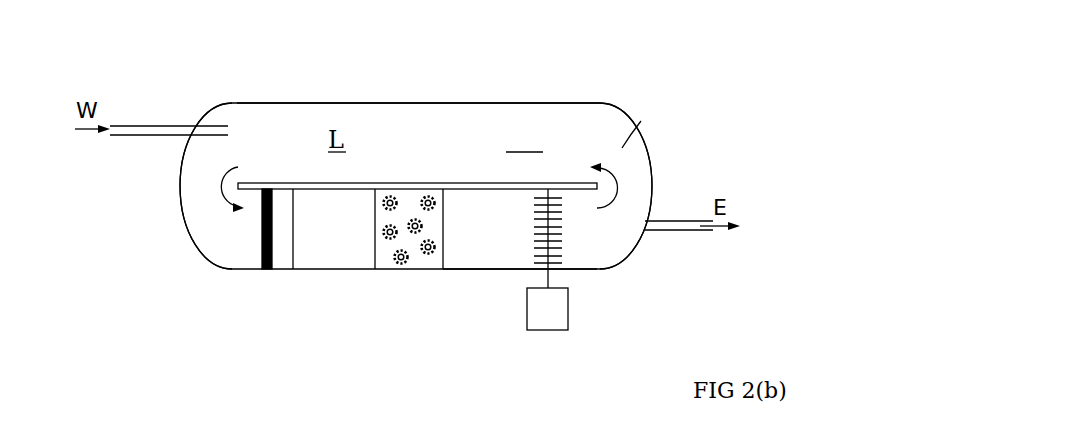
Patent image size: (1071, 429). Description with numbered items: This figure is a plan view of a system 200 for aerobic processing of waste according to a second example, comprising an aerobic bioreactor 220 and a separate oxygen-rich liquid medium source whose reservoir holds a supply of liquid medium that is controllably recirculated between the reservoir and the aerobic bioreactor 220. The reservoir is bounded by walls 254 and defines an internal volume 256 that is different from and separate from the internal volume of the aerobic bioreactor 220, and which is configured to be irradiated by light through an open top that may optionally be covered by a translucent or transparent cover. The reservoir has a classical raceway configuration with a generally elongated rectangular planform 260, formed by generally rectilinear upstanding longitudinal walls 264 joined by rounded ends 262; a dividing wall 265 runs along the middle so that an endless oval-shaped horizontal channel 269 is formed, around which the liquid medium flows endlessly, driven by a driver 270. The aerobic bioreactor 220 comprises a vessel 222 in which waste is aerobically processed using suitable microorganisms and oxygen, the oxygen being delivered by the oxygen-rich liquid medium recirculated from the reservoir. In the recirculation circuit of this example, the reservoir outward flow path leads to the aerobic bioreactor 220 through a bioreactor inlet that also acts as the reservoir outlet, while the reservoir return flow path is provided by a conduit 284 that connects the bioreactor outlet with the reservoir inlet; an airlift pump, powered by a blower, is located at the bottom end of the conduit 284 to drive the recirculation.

The system 200 is at (631, 97).
The walls 254 is at (337, 103).
The planform 260 is at (418, 103).
The longitudinal walls 264 is at (545, 103).
The rounded ends 262 is at (185, 189).
The horizontal channel 269 is at (636, 128).
The dividing wall 265 is at (452, 183).
The internal volume 256 is at (527, 140).
The vessel 222 is at (319, 262).
The aerobic bioreactor 220 is at (375, 271).
The conduit 284 is at (490, 270).
The driver 270 is at (568, 303).